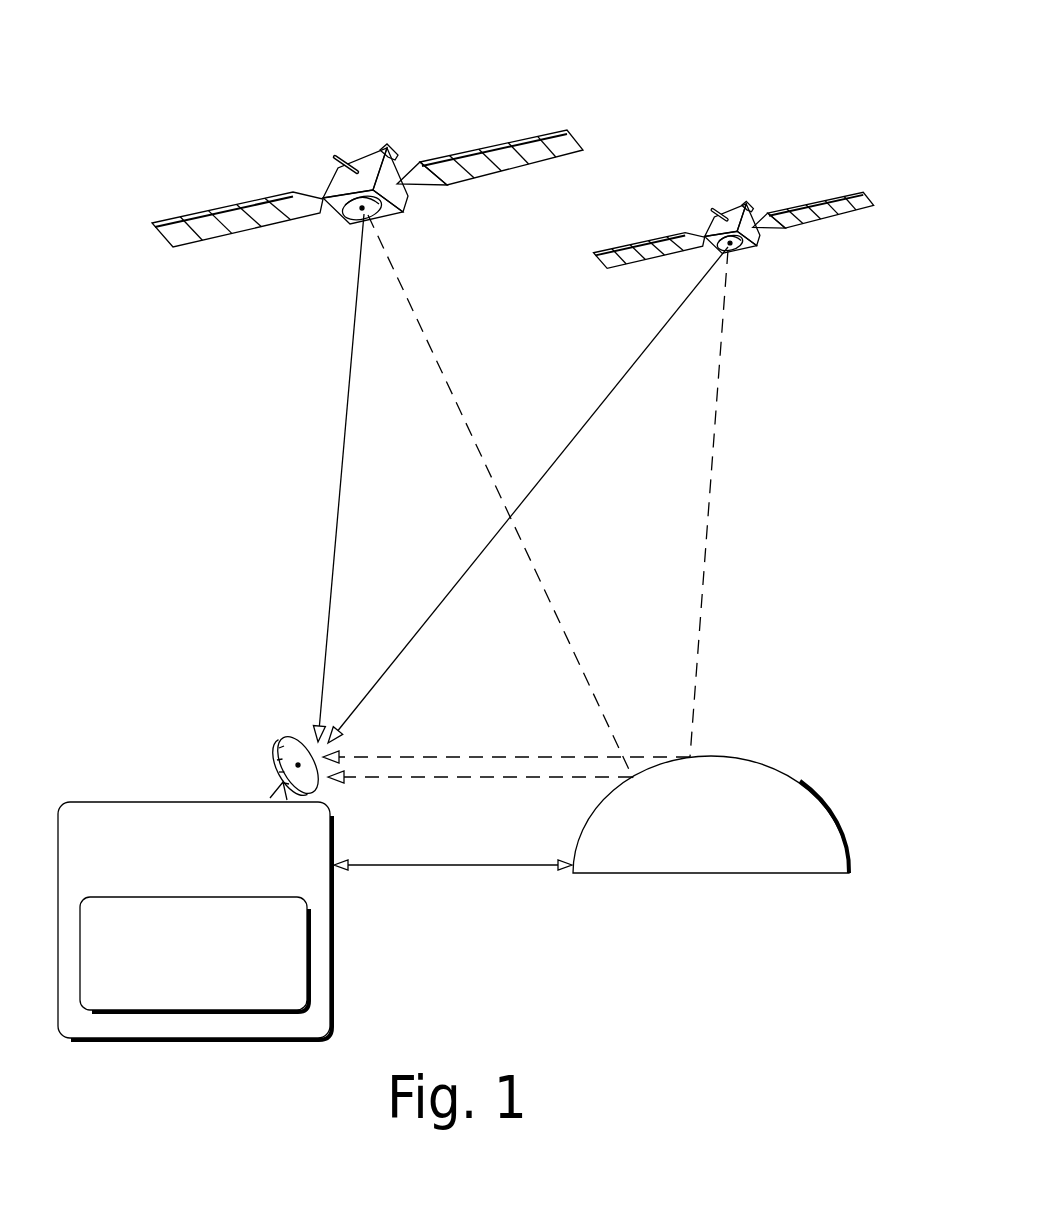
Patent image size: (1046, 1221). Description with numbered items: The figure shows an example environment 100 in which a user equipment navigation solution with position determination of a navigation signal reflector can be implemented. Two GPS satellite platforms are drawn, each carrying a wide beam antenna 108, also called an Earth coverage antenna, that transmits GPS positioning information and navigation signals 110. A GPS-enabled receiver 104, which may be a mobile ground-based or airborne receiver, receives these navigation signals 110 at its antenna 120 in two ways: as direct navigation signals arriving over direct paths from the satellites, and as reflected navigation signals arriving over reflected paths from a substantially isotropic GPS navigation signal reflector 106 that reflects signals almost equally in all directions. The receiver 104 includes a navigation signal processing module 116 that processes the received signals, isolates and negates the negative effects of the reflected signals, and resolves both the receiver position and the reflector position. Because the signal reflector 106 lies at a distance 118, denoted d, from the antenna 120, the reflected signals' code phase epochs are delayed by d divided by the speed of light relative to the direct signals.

The environment 100 is at (657, 51).
The GPS-enabled receiver 104 is at (77, 851).
The GPS navigation signal reflector 106 is at (627, 817).
The wide beam antenna 108 is at (346, 218).
The navigation signals 110 is at (287, 578).
The navigation signal processing module 116 is at (173, 991).
The distance 118 is at (410, 902).
The antenna 120 is at (277, 755).